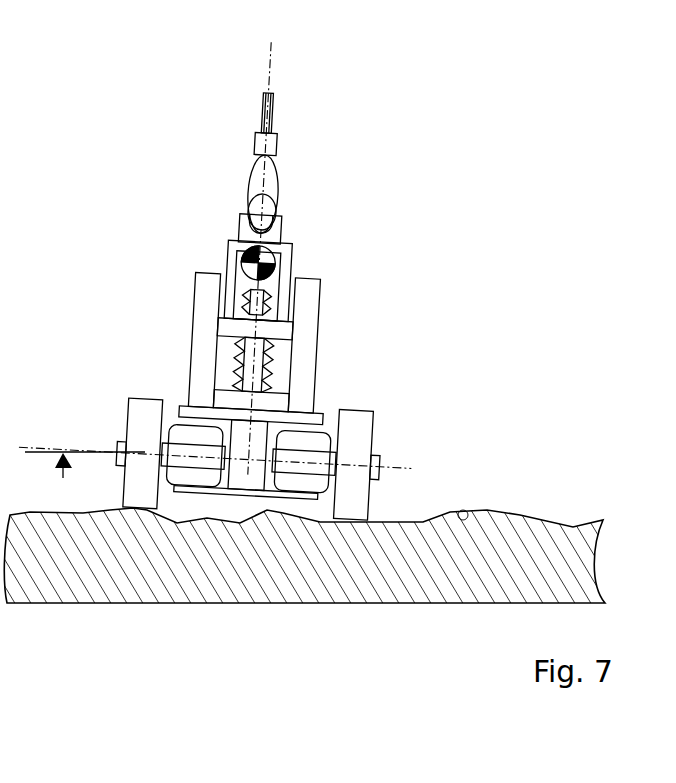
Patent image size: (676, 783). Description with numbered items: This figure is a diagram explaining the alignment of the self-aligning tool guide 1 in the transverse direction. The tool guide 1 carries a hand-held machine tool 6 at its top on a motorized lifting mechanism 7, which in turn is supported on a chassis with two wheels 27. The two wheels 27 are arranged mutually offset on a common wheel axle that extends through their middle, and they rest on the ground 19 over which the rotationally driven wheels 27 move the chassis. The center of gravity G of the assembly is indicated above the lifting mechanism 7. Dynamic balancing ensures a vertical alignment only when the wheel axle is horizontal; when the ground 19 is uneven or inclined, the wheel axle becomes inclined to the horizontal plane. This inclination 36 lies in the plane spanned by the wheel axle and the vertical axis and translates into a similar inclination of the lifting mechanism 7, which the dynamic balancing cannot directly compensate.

The self-aligning tool guide 1 is at (186, 81).
The hand-held machine tool 6 is at (260, 202).
The center of gravity G is at (277, 262).
The motorized lifting mechanism 7 is at (265, 327).
The wheels 27 is at (137, 490).
The inclination 36 is at (63, 440).
The ground 19 is at (518, 508).